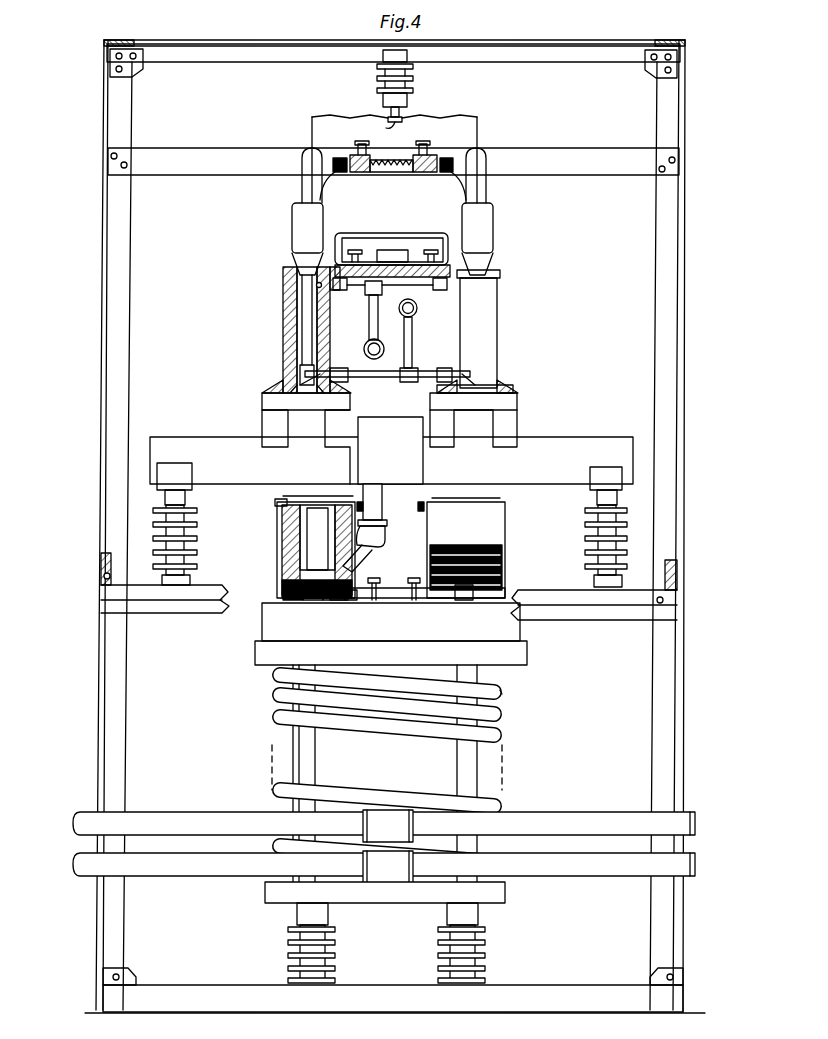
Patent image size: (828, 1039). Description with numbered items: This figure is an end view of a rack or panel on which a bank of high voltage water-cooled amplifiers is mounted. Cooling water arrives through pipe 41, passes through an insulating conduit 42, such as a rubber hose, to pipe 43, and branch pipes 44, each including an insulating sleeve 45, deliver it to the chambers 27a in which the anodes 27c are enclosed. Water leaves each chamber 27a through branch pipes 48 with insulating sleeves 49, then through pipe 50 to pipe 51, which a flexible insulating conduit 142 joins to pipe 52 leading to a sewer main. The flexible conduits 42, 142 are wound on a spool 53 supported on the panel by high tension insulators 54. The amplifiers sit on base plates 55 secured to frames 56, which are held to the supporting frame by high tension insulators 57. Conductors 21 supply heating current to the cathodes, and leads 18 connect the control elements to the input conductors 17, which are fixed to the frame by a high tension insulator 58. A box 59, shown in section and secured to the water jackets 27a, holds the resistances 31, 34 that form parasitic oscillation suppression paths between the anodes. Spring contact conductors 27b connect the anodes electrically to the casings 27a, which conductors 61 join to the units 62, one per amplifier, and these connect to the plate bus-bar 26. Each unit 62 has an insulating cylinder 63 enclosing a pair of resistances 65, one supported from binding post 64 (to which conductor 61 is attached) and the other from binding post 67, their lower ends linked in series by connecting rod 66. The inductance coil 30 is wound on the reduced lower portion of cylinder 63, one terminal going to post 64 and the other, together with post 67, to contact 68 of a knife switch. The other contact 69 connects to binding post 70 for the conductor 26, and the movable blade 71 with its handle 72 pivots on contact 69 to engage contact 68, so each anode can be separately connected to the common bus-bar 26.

The input conductors 17 is at (386, 116).
The leads 18 is at (312, 117).
The high tension insulator 58 is at (405, 90).
The conductors 21 is at (478, 152).
The box 59 is at (372, 232).
The resistance 31 is at (355, 248).
The resistance 34 is at (395, 247).
The chamber 27a is at (284, 305).
The anode 27c is at (304, 325).
The spring contact conductors 27b is at (298, 368).
The insulating sleeve 45 is at (348, 300).
The branch pipes 44 is at (396, 286).
The pipe 43 is at (370, 328).
The branch pipes 48 is at (318, 372).
The insulating sleeve 49 is at (340, 370).
The pipe 51 is at (418, 306).
The pipe 50 is at (413, 327).
The base plates 55 is at (508, 407).
The frames 56 is at (558, 445).
The conductors 61 is at (416, 462).
The units 62 is at (320, 500).
The binding post 67 is at (276, 501).
The high tension insulators 57 is at (192, 531).
The insulating cylinder 63 is at (278, 535).
The resistances 65 is at (317, 537).
The connecting rod 66 is at (316, 572).
The binding post 64 is at (365, 508).
The binding post 70 is at (370, 553).
The plate conductor or bus-bar 26 is at (378, 593).
The inductance coil 30 is at (505, 568).
The handle 72 is at (296, 604).
The contact 68 is at (318, 604).
The movable switch blade 71 is at (342, 604).
The contact 69 is at (357, 604).
The spool 53 is at (528, 654).
The flexible insulating conduit 142 is at (505, 692).
The insulating conduit 42 is at (505, 716).
The pipe 41 is at (600, 818).
The pipe 52 is at (200, 878).
The high tension insulators 54 is at (326, 963).